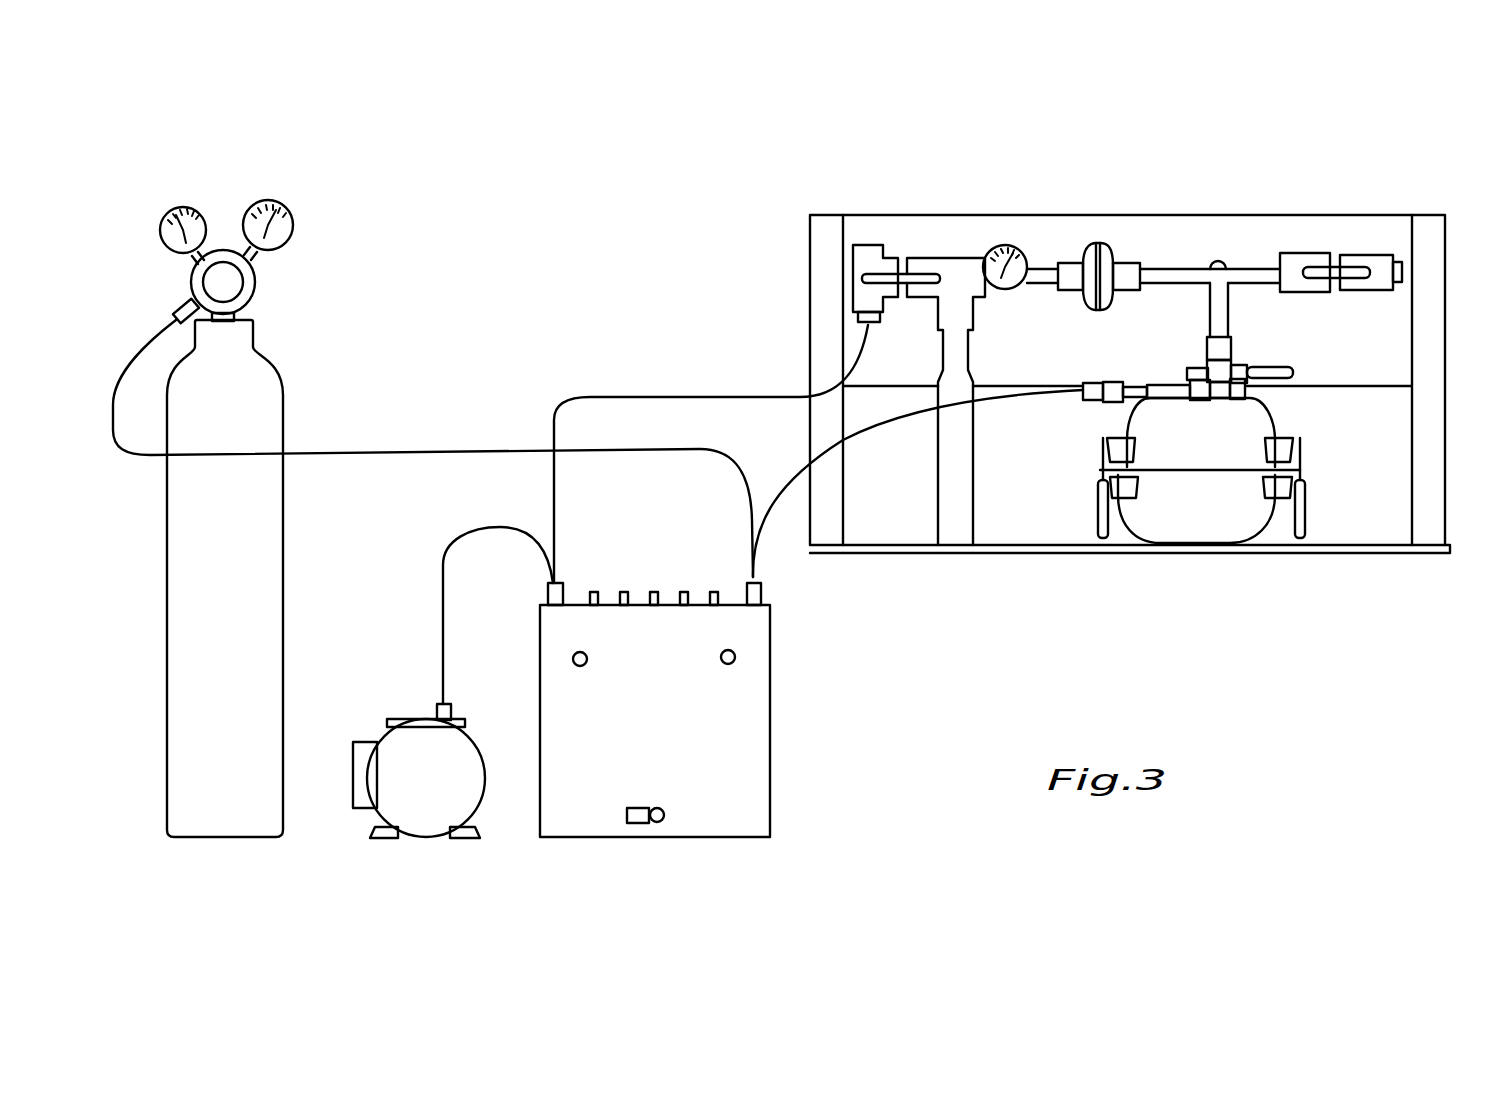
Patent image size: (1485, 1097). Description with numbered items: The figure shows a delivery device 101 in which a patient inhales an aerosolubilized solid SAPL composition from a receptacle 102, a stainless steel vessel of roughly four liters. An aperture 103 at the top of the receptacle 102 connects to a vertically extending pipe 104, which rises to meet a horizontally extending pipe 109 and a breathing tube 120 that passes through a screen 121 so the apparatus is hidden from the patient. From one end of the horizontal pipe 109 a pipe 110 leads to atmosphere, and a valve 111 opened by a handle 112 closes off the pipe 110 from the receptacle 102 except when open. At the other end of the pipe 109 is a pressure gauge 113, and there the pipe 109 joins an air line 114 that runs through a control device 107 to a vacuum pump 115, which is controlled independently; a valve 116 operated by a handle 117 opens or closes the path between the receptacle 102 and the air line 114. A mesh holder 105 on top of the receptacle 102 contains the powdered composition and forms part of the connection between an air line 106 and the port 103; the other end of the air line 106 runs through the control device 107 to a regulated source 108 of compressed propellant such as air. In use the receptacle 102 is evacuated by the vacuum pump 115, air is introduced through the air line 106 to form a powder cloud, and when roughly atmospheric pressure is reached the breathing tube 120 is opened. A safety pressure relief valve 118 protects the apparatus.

The device 101 is at (769, 142).
The receptacle 102 is at (1208, 508).
The aperture 103 is at (1213, 400).
The pipe 104 is at (1232, 322).
The mesh holder 105 is at (1159, 384).
The air line 106 is at (903, 428).
The control device 107 is at (716, 756).
The regulated source of compressed propellant 108 is at (283, 385).
The horizontally extending pipe 109 is at (1138, 262).
The pipe to atmosphere 110 is at (1377, 254).
The valve 111 is at (1315, 252).
The handle 112 is at (1351, 264).
The pressure gauge 113 is at (990, 256).
The air line 114 is at (640, 395).
The vacuum pump 115 is at (432, 806).
The valve 116 is at (953, 268).
The handle 117 is at (863, 283).
The safety pressure relief valve 118 is at (962, 345).
The breathing tube 120 is at (1225, 256).
The screen 121 is at (1340, 508).